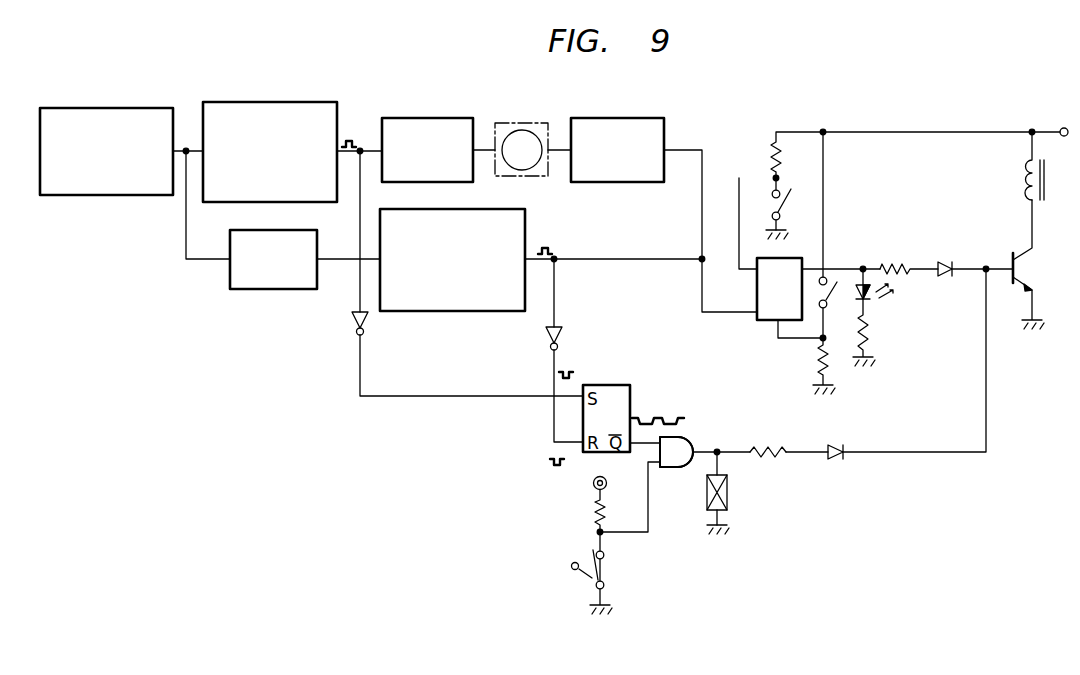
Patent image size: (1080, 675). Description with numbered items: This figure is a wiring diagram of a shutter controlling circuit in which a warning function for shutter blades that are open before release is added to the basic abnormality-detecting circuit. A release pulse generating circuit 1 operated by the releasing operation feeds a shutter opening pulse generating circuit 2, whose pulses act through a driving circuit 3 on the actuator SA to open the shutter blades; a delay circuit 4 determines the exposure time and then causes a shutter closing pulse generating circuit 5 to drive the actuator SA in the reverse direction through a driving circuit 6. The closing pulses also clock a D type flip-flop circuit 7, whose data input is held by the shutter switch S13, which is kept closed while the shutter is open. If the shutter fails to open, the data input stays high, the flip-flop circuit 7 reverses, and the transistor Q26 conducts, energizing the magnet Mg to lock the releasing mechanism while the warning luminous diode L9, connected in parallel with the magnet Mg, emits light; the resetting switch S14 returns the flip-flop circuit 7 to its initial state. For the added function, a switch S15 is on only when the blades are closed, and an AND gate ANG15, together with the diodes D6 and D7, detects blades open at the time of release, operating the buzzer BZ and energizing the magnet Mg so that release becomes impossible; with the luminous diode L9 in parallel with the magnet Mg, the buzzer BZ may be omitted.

The release pulse generating circuit 1 is at (118, 107).
The shutter opening pulse generating circuit 2 is at (270, 102).
The driving circuit 3 is at (428, 118).
The delay circuit 4 is at (250, 289).
The shutter closing pulse generating circuit 5 is at (448, 311).
The driving circuit 6 is at (620, 118).
The D type flip-flop circuit 7 is at (760, 322).
The actuator SA is at (522, 165).
The shutter switch S13 is at (789, 214).
The resetting switch S14 is at (815, 263).
The warning luminous diode L9 is at (873, 316).
The diode D7 is at (943, 282).
The transistor Q26 is at (1038, 264).
The magnet Mg is at (1017, 166).
The AND gate ANG15 is at (702, 441).
The diode D6 is at (836, 468).
The buzzer BZ is at (730, 504).
The switch S15 is at (604, 546).